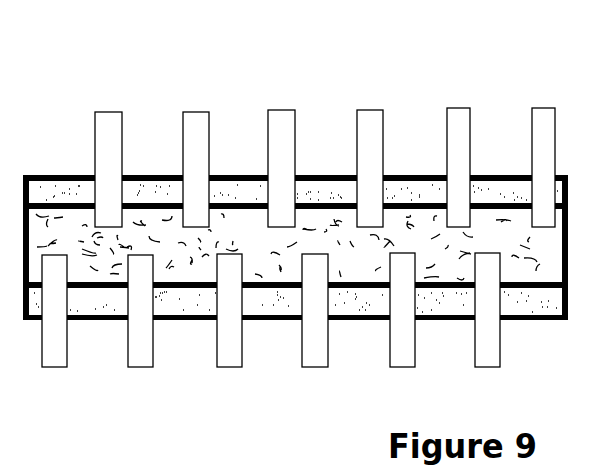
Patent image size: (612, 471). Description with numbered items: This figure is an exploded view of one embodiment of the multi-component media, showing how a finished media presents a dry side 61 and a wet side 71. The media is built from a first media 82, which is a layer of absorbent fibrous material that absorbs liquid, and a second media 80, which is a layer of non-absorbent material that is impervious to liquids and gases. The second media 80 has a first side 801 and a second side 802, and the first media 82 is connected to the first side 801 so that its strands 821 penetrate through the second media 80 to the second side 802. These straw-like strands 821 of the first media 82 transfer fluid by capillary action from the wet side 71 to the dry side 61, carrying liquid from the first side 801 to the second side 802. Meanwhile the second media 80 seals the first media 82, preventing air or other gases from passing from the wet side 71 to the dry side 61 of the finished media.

The dry side 61 is at (298, 52).
The wet side 71 is at (317, 428).
The second media 80 is at (295, 242).
The first side 801 is at (493, 200).
The second side 802 is at (415, 197).
The first media 82 is at (181, 268).
The strands 821 is at (108, 115).